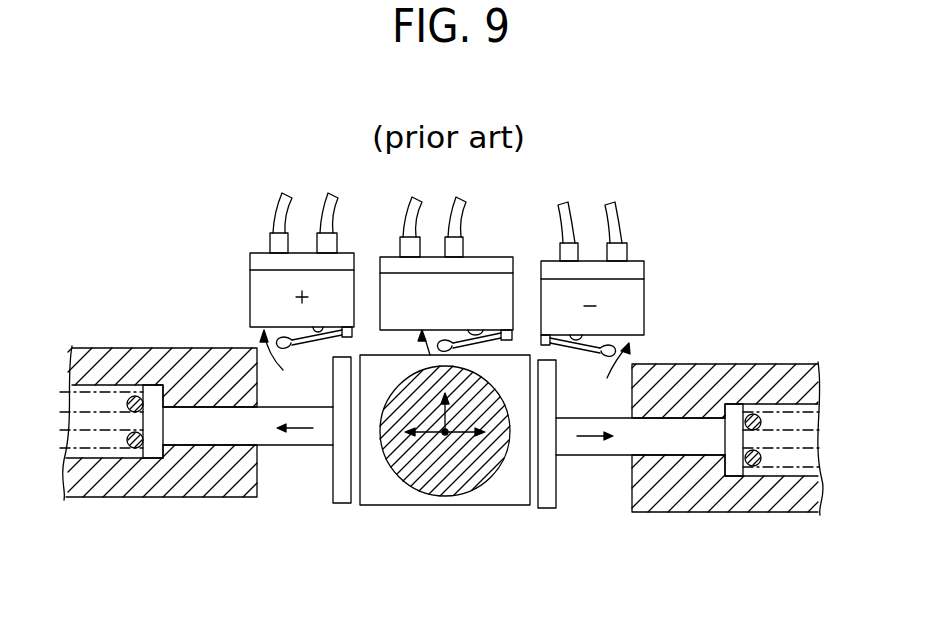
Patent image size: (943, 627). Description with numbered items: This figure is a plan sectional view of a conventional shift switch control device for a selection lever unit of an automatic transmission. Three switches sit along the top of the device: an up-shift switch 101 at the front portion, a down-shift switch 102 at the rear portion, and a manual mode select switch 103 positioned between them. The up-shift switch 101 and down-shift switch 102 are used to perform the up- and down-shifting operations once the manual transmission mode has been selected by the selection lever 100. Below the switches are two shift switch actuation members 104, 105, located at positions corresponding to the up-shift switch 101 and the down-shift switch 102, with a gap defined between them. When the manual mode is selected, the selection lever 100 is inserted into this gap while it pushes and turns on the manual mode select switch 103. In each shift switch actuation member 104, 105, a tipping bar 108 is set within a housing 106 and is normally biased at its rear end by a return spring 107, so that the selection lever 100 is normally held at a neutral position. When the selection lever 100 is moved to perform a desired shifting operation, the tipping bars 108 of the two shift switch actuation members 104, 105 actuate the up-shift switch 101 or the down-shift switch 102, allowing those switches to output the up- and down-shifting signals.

The selection lever 100 is at (450, 493).
The up-shift switch 101 is at (258, 284).
The down-shift switch 102 is at (644, 288).
The manual mode select switch 103 is at (392, 257).
The shift switch actuation member 104 is at (171, 512).
The shift switch actuation member 105 is at (722, 519).
The housing 106 is at (130, 488).
The return spring 107 is at (137, 397).
The tipping bar 108 is at (252, 435).